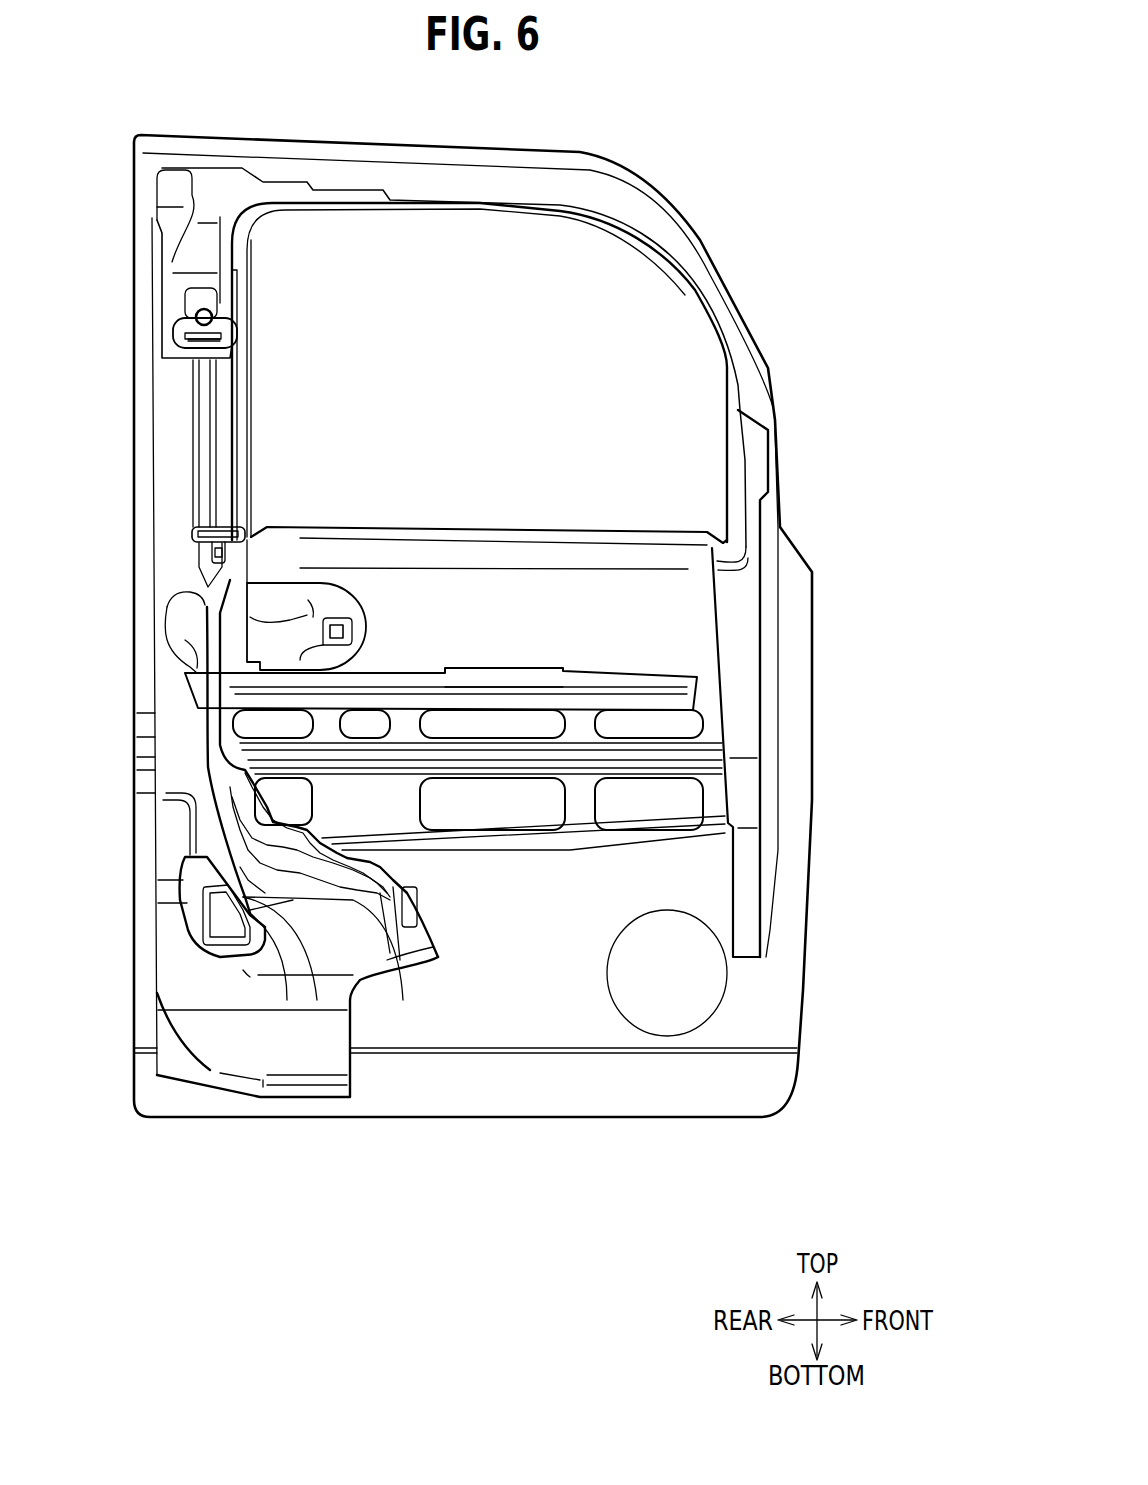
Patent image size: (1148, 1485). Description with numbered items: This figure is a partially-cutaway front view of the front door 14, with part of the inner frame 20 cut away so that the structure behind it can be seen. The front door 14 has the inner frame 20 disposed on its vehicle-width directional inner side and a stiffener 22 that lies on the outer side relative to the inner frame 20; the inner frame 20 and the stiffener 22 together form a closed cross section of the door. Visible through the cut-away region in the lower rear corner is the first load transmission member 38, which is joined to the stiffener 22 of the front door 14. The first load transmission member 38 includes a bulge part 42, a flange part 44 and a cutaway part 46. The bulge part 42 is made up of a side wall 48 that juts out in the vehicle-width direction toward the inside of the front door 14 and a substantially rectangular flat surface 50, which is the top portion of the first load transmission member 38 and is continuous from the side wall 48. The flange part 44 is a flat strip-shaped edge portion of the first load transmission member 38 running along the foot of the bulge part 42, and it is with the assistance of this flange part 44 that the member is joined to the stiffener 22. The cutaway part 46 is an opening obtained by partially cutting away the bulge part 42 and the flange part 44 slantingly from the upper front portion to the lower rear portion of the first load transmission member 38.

The front door 14 is at (473, 626).
The inner frame 20 is at (390, 1010).
The stiffener 22 is at (172, 820).
The first load transmission member 38 is at (190, 947).
The bulge part 42 is at (215, 985).
The flange part 44 is at (287, 1000).
The cutaway part 46 is at (317, 1000).
The side wall 48 is at (200, 917).
The flat surface 50 is at (222, 925).